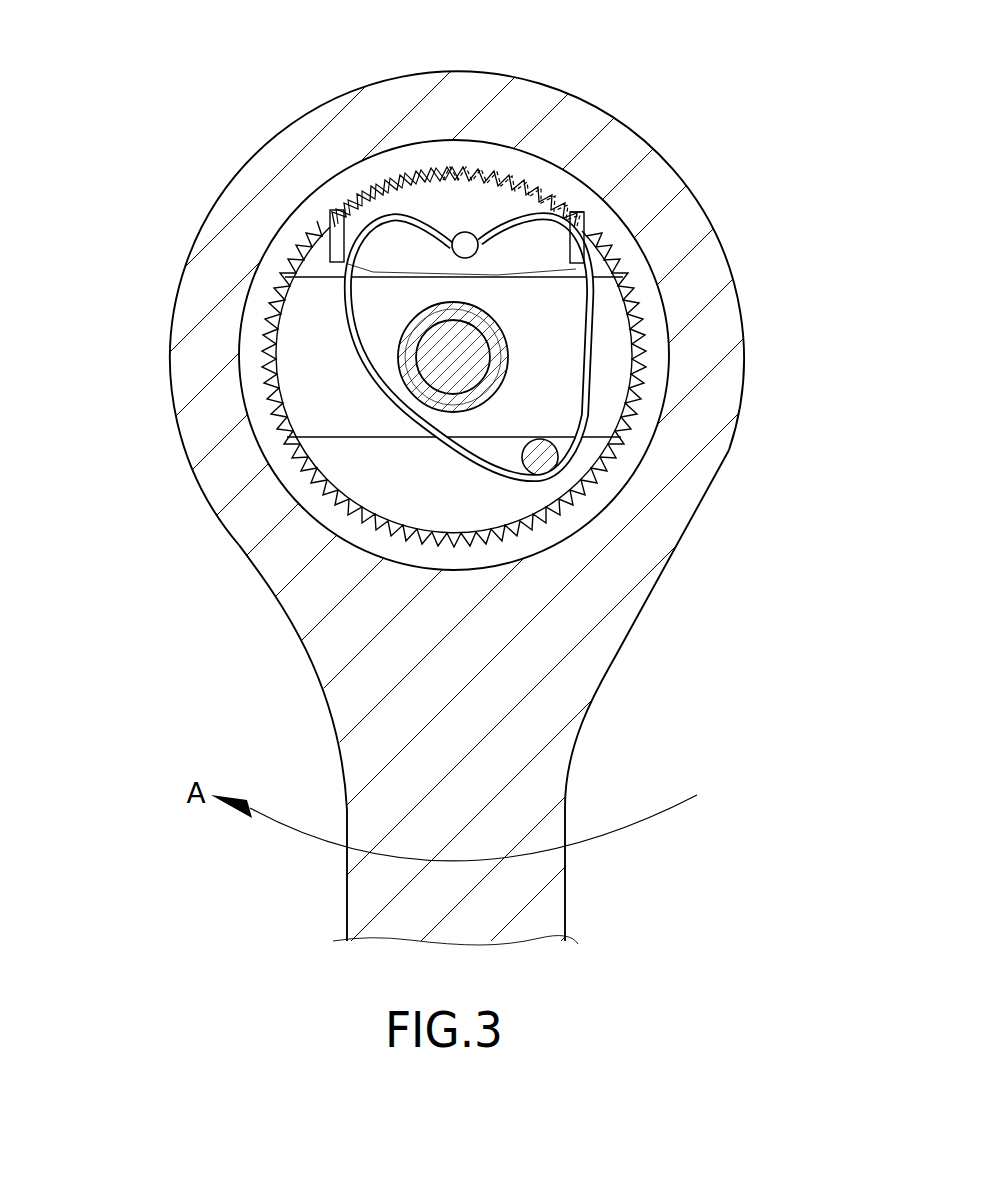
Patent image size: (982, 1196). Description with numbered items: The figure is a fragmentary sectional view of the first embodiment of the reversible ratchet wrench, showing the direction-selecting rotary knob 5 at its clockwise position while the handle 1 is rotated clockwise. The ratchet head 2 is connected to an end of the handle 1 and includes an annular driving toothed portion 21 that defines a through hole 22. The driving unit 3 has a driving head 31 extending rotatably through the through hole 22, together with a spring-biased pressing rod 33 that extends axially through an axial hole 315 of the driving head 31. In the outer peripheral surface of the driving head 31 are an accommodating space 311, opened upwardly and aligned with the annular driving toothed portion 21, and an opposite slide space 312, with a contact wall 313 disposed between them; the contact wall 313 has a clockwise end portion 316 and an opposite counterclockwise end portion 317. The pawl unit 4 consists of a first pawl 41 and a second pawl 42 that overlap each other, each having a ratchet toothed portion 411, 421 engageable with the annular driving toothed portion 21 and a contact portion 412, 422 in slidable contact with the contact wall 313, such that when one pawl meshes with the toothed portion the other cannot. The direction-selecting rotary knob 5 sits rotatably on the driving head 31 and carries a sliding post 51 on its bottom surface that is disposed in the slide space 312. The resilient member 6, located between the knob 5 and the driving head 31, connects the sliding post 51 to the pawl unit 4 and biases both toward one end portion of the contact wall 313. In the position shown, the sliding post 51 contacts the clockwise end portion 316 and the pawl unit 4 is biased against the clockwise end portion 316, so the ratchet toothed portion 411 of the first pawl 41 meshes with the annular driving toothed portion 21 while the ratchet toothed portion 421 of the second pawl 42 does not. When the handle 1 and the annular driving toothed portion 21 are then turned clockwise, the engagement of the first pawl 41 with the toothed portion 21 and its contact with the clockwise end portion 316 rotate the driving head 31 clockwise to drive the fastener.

The handle 1 is at (582, 899).
The ratchet head 2 is at (153, 348).
The annular driving toothed portion 21 is at (529, 355).
The through hole 22 is at (580, 509).
The driving unit 3 is at (337, 397).
The driving head 31 is at (258, 380).
The accommodating space 311 is at (290, 256).
The slide space 312 is at (388, 518).
The contact wall 313 is at (337, 384).
The counterclockwise end portion 317 is at (285, 327).
The axial hole 315 is at (493, 367).
The clockwise end portion 316 is at (613, 340).
The spring-biased pressing rod 33 is at (463, 370).
The pawl unit 4 is at (537, 179).
The first pawl 41 is at (603, 144).
The ratchet toothed portion 411 is at (575, 208).
The contact portion 412 is at (511, 144).
The second pawl 42 is at (420, 154).
The ratchet toothed portion 421 is at (346, 208).
The contact portion 422 is at (496, 273).
The direction-selecting rotary knob 5 is at (672, 457).
The sliding post 51 is at (574, 452).
The resilient member 6 is at (428, 450).